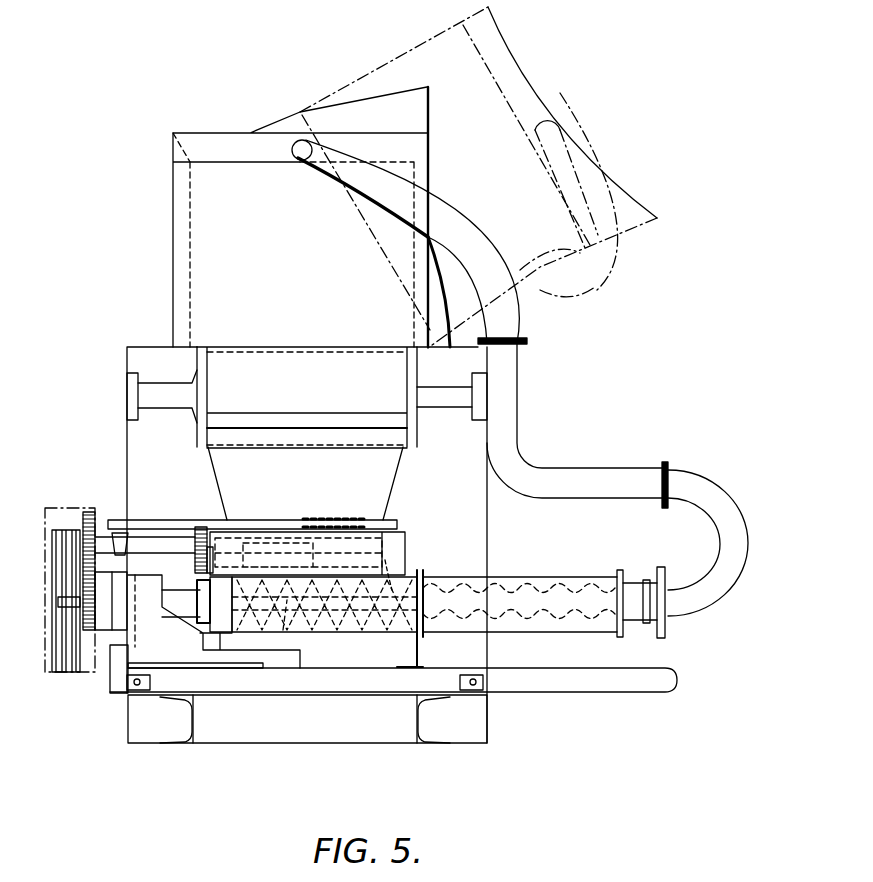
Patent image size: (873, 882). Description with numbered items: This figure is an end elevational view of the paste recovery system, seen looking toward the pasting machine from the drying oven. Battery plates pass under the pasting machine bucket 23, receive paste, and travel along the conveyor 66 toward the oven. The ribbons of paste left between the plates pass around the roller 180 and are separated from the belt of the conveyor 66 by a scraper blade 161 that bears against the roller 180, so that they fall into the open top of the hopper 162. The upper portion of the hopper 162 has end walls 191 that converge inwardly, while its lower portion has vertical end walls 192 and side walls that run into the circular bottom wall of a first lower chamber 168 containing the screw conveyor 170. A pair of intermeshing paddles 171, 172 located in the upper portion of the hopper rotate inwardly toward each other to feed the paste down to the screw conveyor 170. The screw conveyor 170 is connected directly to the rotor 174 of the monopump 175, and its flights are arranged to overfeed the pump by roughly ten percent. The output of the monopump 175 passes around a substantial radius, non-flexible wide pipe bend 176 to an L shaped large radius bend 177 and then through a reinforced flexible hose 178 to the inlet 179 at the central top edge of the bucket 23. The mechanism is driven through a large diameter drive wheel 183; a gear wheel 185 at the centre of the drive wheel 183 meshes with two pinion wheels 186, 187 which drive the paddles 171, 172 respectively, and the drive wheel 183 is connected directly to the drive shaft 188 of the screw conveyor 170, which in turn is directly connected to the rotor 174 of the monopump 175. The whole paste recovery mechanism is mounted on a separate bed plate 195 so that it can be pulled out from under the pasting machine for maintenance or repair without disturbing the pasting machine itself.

The pasting machine bucket 23 is at (173, 228).
The conveyor 66 is at (248, 345).
The scraper blade 161 is at (340, 422).
The hopper 162 is at (203, 468).
The first lower chamber 168 is at (355, 633).
The screw conveyor 170 is at (283, 630).
The paddle 171 is at (407, 558).
The paddle 172 is at (400, 533).
The rotor 174 is at (538, 588).
The monopump 175 is at (557, 633).
The wide pipe bend 176 is at (729, 497).
The L shaped large radius bend 177 is at (530, 452).
The reinforced flexible hose 178 is at (488, 257).
The inlet 179 is at (300, 155).
The roller 180 is at (197, 440).
The drive wheel 183 is at (58, 670).
The gear wheel 185 is at (90, 630).
The pinion wheel 186 is at (197, 574).
The pinion wheel 187 is at (203, 510).
The drive shaft 188 is at (178, 604).
The end walls 191 is at (400, 495).
The vertical end walls 192 is at (392, 590).
The bed plate 195 is at (563, 693).